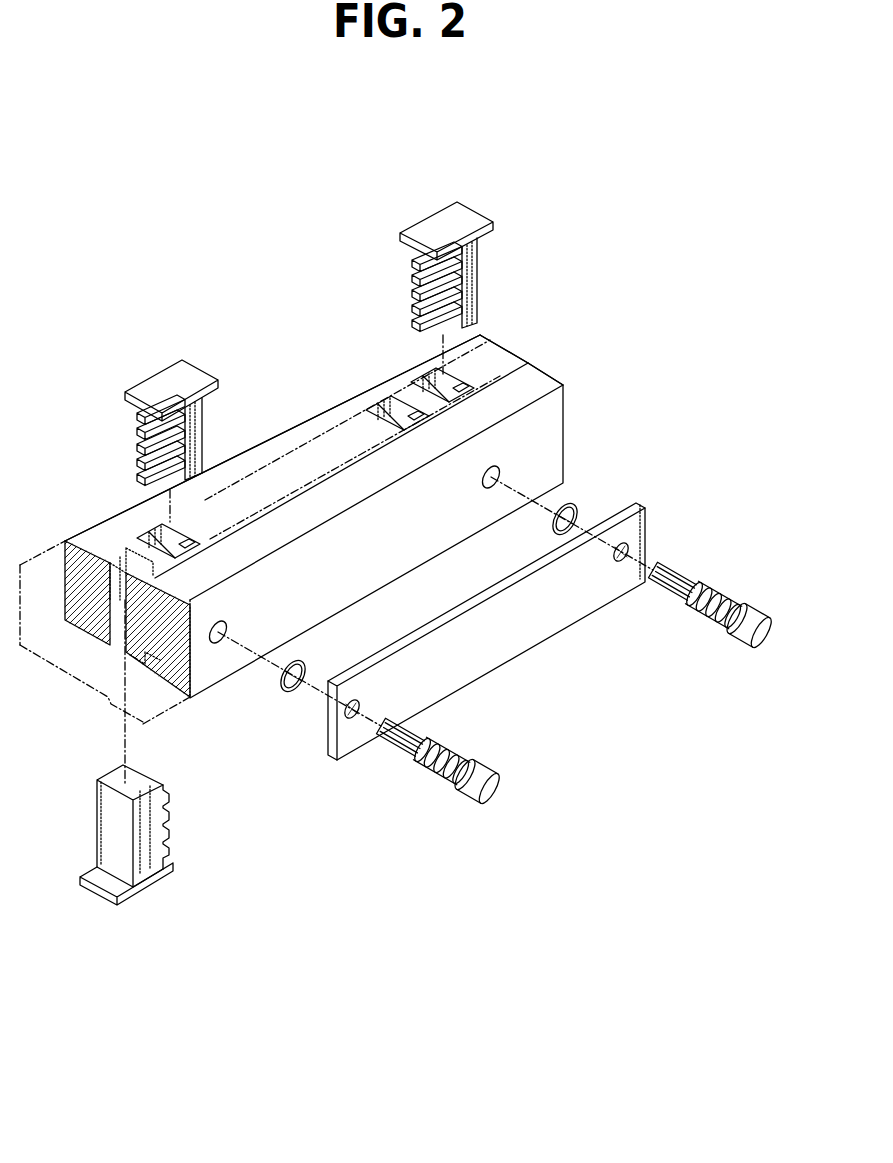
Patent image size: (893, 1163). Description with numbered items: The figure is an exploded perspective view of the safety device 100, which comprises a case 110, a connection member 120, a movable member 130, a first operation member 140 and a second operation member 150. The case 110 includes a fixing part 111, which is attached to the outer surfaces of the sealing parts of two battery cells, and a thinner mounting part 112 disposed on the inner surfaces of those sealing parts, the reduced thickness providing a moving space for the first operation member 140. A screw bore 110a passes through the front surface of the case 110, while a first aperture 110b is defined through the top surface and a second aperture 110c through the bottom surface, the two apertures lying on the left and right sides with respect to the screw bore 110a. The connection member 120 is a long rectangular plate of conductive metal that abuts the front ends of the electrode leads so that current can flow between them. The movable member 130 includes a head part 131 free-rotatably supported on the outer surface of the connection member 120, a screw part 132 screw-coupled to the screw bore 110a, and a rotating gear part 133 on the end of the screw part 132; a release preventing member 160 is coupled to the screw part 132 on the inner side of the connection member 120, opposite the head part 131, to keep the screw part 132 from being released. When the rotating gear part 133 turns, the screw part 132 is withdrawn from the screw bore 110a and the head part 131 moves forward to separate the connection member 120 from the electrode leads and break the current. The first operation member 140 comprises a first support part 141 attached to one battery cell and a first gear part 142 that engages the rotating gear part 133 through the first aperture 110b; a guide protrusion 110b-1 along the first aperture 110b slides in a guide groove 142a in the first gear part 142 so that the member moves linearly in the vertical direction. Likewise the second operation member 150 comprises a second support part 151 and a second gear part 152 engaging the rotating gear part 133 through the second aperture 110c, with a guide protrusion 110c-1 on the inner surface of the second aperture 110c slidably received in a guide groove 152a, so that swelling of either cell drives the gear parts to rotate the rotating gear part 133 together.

The safety device 100 is at (336, 267).
The case 110 is at (509, 281).
The fixing part 111 is at (538, 385).
The mounting part 112 is at (468, 352).
The screw bore 110a is at (498, 475).
The first aperture 110b is at (200, 533).
The second aperture 110c is at (168, 698).
The guide protrusion 110b-1 is at (367, 395).
The guide protrusion 110c-1 is at (430, 366).
The connection member 120 is at (481, 645).
The movable member 130 is at (337, 794).
The head part 131 is at (473, 796).
The screw part 132 is at (433, 772).
The rotating gear part 133 is at (393, 749).
The first operation member 140 is at (313, 387).
The first support part 141 is at (192, 376).
The first gear part 142 is at (200, 409).
The guide groove 142a is at (195, 433).
The second operation member 150 is at (120, 950).
The second support part 151 is at (150, 860).
The second gear part 152 is at (105, 872).
The guide groove 152a is at (162, 860).
The release preventing member 160 is at (290, 698).